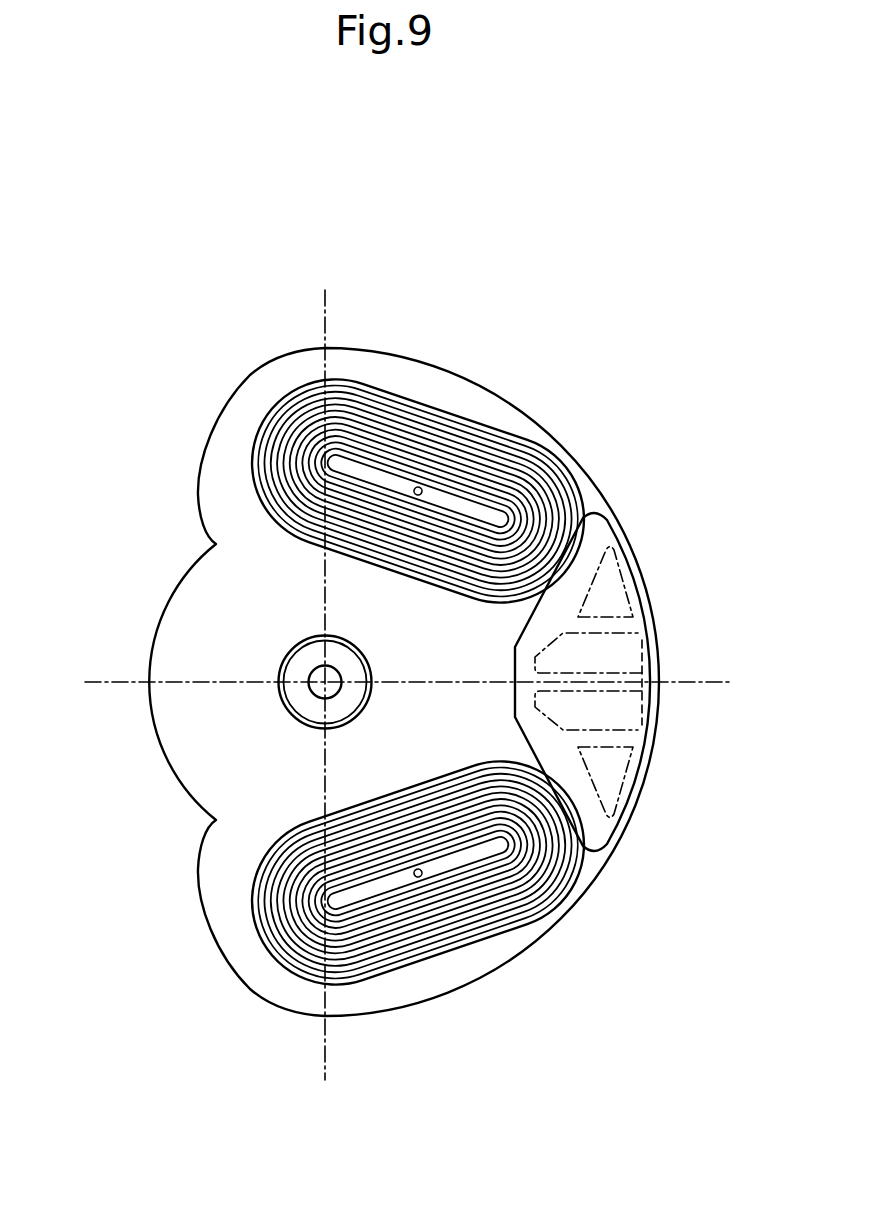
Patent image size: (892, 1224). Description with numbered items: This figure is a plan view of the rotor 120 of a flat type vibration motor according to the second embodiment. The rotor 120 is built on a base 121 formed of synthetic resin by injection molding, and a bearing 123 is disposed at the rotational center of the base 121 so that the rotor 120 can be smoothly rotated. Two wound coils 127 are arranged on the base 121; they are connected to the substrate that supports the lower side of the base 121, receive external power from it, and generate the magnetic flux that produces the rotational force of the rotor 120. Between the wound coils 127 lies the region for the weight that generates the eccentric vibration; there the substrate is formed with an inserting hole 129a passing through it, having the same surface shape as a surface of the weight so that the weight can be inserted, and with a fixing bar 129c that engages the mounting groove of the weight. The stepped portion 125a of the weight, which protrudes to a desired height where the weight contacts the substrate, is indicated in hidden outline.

The rotor 120 is at (171, 343).
The base 121 is at (238, 528).
The bearing 123 is at (300, 698).
The stepped portion 125a is at (633, 610).
The wound coil 127 is at (527, 460).
The inserting hole 129a is at (618, 713).
The fixing bar 129c is at (607, 623).